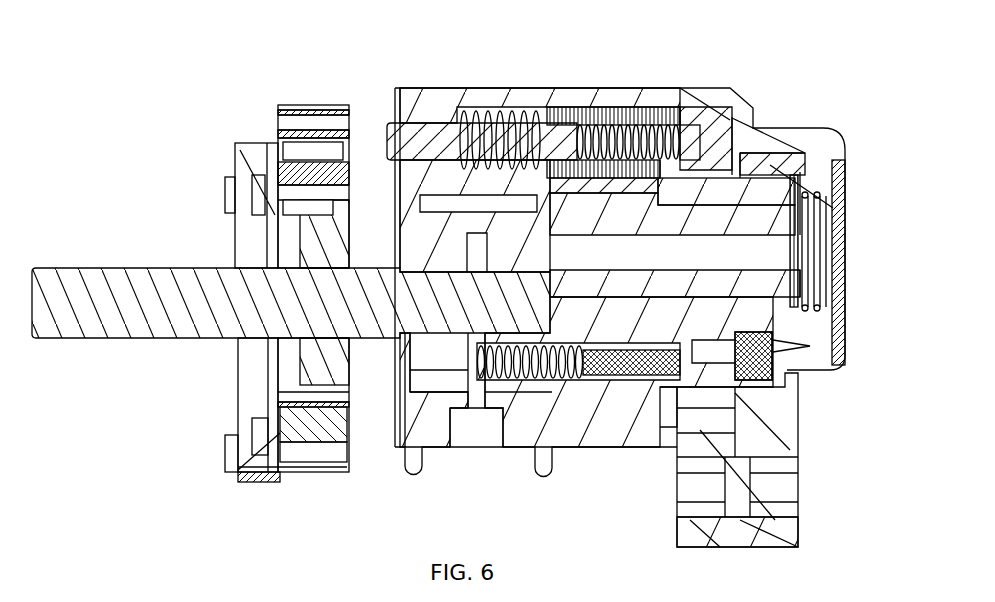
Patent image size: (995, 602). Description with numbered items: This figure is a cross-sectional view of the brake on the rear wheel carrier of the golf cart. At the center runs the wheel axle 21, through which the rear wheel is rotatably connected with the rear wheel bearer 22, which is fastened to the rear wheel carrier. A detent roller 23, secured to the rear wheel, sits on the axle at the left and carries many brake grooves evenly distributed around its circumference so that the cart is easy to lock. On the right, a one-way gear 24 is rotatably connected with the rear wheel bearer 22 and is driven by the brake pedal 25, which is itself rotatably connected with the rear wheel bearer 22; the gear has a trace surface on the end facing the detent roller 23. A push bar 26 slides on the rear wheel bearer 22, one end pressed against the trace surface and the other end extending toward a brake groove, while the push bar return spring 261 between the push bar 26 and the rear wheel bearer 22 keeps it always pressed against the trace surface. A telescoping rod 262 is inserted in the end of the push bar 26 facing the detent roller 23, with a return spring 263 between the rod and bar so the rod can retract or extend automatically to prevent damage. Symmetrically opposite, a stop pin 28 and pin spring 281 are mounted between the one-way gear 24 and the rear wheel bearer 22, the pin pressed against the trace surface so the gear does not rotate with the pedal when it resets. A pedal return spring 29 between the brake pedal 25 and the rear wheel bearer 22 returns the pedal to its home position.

The wheel axle 21 is at (127, 298).
The rear wheel bearer 22 is at (571, 425).
The detent roller 23 is at (277, 187).
The one-way gear 24 is at (740, 130).
The brake pedal 25 is at (767, 440).
The push bar 26 is at (617, 115).
The push bar return spring 261 is at (480, 125).
The telescoping rod 262 is at (400, 88).
The return spring 263 is at (656, 125).
The stop pin 28 is at (641, 378).
The pin spring 281 is at (520, 340).
The pedal return spring 29 is at (818, 180).